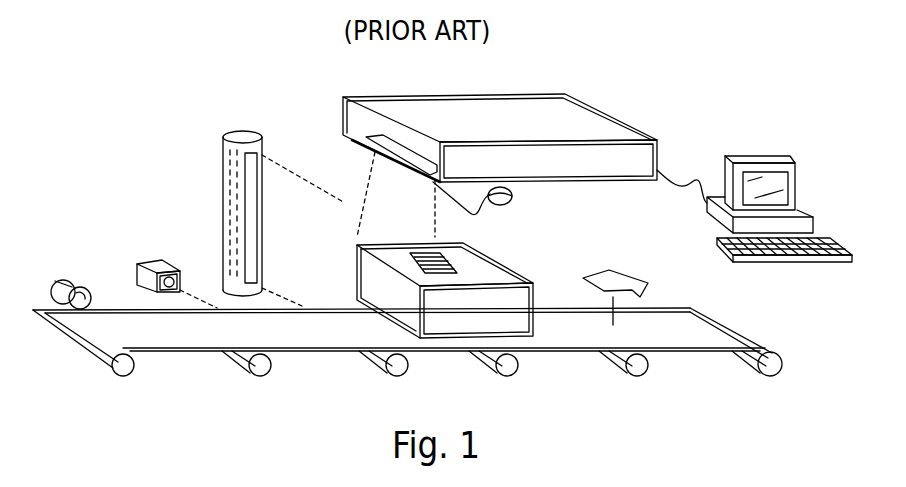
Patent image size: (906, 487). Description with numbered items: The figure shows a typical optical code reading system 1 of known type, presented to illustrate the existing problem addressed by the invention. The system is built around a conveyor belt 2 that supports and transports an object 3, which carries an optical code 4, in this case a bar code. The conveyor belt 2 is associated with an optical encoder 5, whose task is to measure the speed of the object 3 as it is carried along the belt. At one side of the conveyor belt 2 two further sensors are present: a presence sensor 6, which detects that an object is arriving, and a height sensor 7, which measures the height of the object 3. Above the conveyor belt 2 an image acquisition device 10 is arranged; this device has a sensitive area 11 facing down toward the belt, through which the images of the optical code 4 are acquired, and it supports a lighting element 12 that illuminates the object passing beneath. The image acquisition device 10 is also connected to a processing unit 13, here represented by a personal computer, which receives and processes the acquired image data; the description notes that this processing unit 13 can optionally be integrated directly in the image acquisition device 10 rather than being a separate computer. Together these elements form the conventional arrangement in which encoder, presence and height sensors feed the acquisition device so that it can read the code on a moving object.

The optical code reading system 1 is at (729, 282).
The conveyor belt 2 is at (670, 343).
The object 3 is at (368, 283).
The optical code 4 is at (447, 267).
The optical encoder 5 is at (80, 282).
The presence sensor 6 is at (170, 262).
The height sensor 7 is at (233, 218).
The image acquisition device 10 is at (612, 130).
The sensitive area 11 is at (376, 140).
The lighting element 12 is at (512, 198).
The processing unit 13 is at (768, 157).